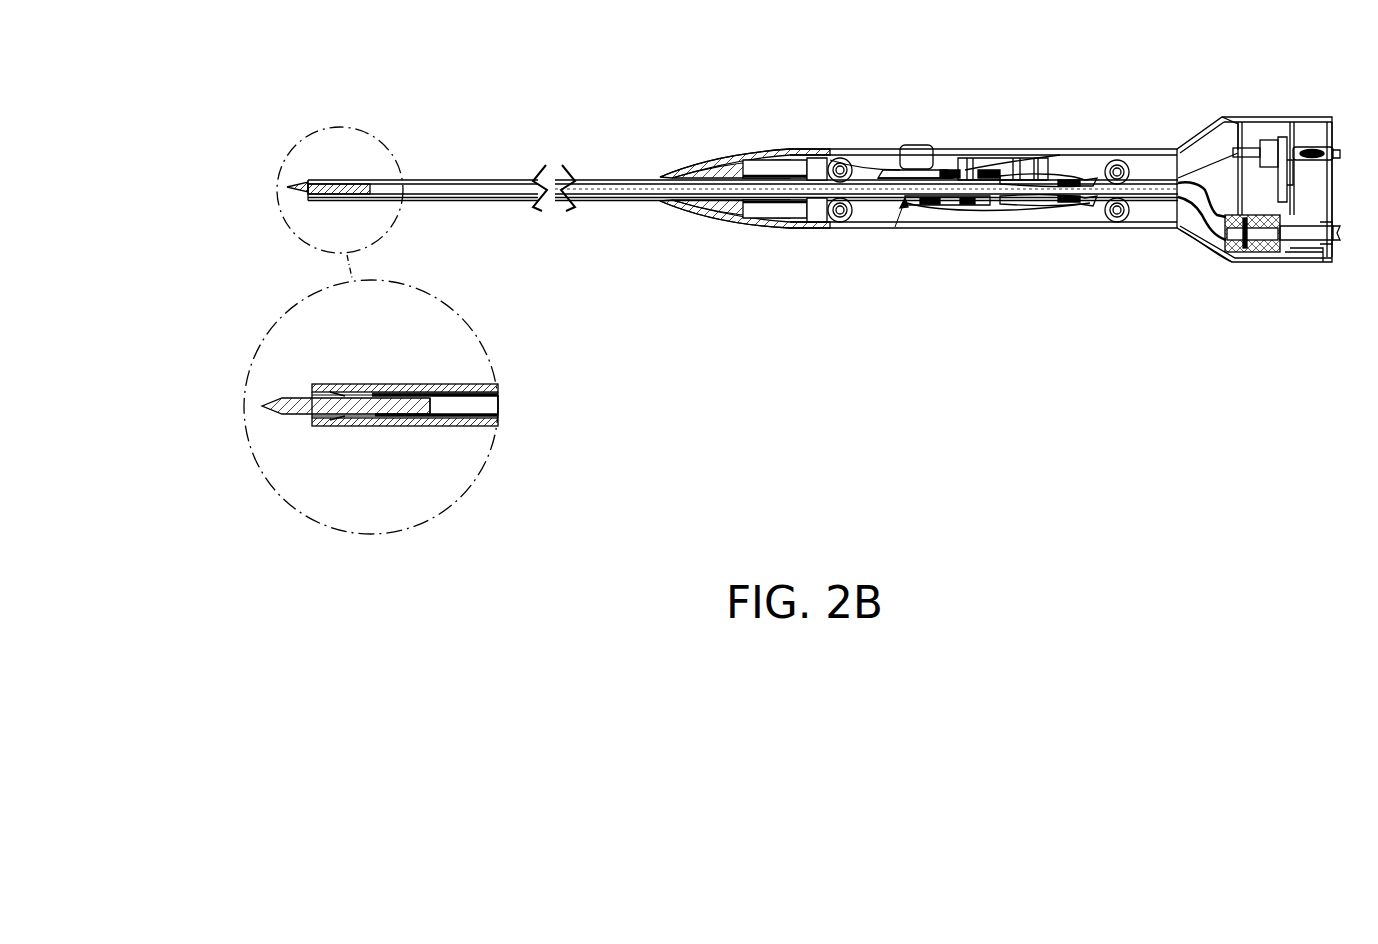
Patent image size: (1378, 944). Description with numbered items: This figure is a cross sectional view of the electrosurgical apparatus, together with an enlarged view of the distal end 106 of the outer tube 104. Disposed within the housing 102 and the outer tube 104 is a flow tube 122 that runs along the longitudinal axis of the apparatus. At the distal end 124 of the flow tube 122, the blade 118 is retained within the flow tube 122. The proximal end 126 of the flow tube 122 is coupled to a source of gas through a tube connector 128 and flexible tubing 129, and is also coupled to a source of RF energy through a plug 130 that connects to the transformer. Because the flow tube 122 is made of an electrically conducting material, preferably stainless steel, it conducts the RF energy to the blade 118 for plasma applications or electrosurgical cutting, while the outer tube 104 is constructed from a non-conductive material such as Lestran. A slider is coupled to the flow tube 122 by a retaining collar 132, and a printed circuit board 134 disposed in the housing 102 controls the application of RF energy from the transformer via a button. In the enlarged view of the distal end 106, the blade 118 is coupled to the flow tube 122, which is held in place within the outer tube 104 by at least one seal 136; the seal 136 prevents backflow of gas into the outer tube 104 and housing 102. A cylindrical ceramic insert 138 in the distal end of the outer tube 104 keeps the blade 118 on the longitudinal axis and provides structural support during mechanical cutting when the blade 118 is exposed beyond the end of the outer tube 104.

The housing 102 is at (1107, 149).
The outer tube 104 is at (443, 178).
The distal end of the outer tube 106 is at (250, 372).
The blade 118 is at (298, 193).
The flow tube 122 is at (395, 417).
The distal end of the flow tube 124 is at (297, 175).
The proximal end of the flow tube 126 is at (1160, 198).
The tube connector 128 is at (1267, 232).
The flexible tubing 129 is at (1207, 233).
The plug 130 is at (1320, 138).
The retaining collar 132 is at (1060, 180).
The printed circuit board 134 is at (1006, 170).
The seal 136 is at (463, 420).
The cylindrical ceramic insert 138 is at (370, 397).